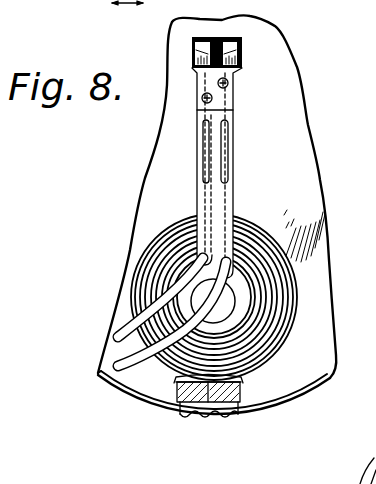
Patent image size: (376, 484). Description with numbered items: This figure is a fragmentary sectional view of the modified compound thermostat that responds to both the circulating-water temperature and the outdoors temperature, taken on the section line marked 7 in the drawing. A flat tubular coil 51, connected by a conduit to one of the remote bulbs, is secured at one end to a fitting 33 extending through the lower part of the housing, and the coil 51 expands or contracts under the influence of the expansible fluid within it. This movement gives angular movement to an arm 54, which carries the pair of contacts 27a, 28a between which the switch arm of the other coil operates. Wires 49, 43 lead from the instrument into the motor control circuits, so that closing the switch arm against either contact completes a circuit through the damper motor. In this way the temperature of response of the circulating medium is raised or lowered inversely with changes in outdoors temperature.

The section line indicator 7 is at (127, 12).
The contact 27a is at (200, 53).
The contact 28a is at (230, 55).
The arm 54 is at (197, 167).
The tubular coil 51 is at (134, 270).
The wire 49 is at (118, 325).
The wire 43 is at (120, 372).
The fitting 33 is at (180, 403).